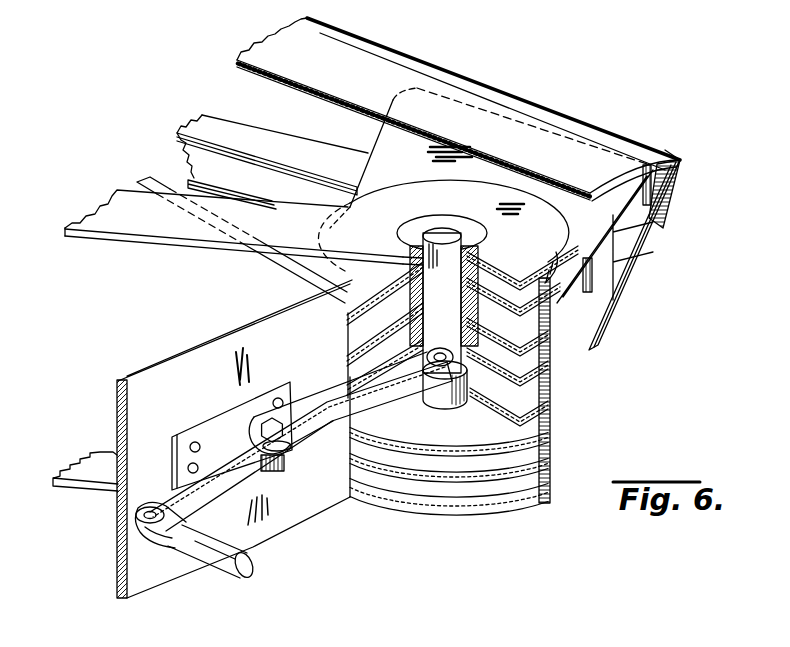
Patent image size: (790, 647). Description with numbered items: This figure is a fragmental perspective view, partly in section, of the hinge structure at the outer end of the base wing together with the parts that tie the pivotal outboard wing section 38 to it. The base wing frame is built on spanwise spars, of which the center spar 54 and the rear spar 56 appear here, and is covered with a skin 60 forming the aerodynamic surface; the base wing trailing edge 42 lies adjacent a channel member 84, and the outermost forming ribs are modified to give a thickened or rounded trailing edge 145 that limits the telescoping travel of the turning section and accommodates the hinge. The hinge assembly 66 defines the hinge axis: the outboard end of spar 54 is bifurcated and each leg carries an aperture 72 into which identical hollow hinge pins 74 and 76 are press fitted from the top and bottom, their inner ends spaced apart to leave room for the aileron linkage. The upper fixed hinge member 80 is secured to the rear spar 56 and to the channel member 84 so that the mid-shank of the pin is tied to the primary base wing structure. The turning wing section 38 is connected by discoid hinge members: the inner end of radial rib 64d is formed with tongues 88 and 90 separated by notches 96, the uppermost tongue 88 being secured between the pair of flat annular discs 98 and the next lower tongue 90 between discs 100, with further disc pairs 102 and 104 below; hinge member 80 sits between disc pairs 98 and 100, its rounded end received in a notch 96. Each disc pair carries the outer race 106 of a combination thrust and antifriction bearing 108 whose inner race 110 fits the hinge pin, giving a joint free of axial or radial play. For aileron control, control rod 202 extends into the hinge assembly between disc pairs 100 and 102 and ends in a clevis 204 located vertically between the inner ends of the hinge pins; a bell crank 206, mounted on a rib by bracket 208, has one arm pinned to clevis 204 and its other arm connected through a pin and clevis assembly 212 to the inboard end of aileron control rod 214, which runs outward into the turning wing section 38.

The pivotal outboard wing section 38 is at (486, 93).
The base wing trailing edge 42 is at (633, 146).
The center spar 54 is at (135, 233).
The rear spar 56 is at (300, 150).
The skin 60 is at (279, 70).
The radial rib 64d is at (318, 510).
The hinge assembly 66 is at (413, 171).
The aperture 72 is at (458, 245).
The hinge pin 74 is at (457, 215).
The hinge pin 76 is at (447, 405).
The fixed hinge member 80 is at (607, 187).
The channel member 84 is at (657, 196).
The tongue 88 is at (346, 318).
The tongue 90 is at (346, 356).
The notch 96 is at (346, 346).
The annular discs 98 is at (405, 197).
The annular discs 100 is at (545, 335).
The annular discs 102 is at (548, 380).
The annular discs 104 is at (548, 445).
The outer race 106 is at (486, 270).
The combination thrust and antifriction bearing 108 is at (402, 268).
The inner race 110 is at (442, 300).
The thickened trailing edge 145 is at (580, 128).
The aileron control rod 202 is at (283, 268).
The clevis 204 is at (447, 350).
The bell crank 206 is at (328, 402).
The bracket 208 is at (290, 381).
The pin and clevis assembly 212 is at (153, 500).
The aileron control rod 214 is at (234, 578).